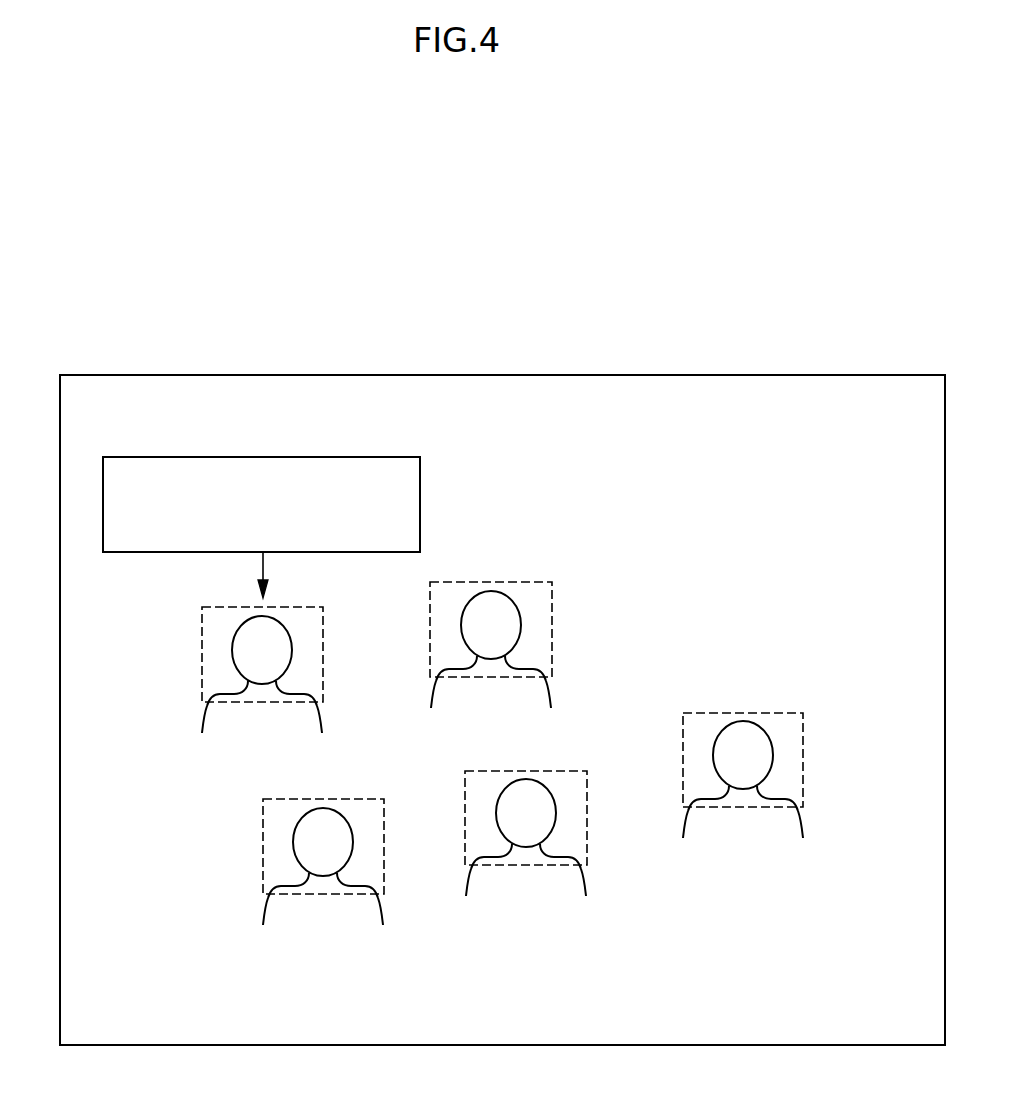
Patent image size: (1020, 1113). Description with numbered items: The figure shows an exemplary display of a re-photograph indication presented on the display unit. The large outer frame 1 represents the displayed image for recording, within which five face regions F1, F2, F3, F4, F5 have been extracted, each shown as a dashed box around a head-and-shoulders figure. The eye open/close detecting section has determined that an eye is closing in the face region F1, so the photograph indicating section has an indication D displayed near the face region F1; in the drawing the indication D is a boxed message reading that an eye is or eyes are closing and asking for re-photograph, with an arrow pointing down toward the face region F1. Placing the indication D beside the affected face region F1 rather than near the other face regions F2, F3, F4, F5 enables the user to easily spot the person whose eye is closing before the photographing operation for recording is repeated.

The display screen 1 is at (480, 375).
The indication D is at (421, 512).
The face region F1 is at (323, 655).
The face region F2 is at (552, 629).
The face region F3 is at (384, 847).
The face region F4 is at (587, 818).
The face region F5 is at (803, 761).